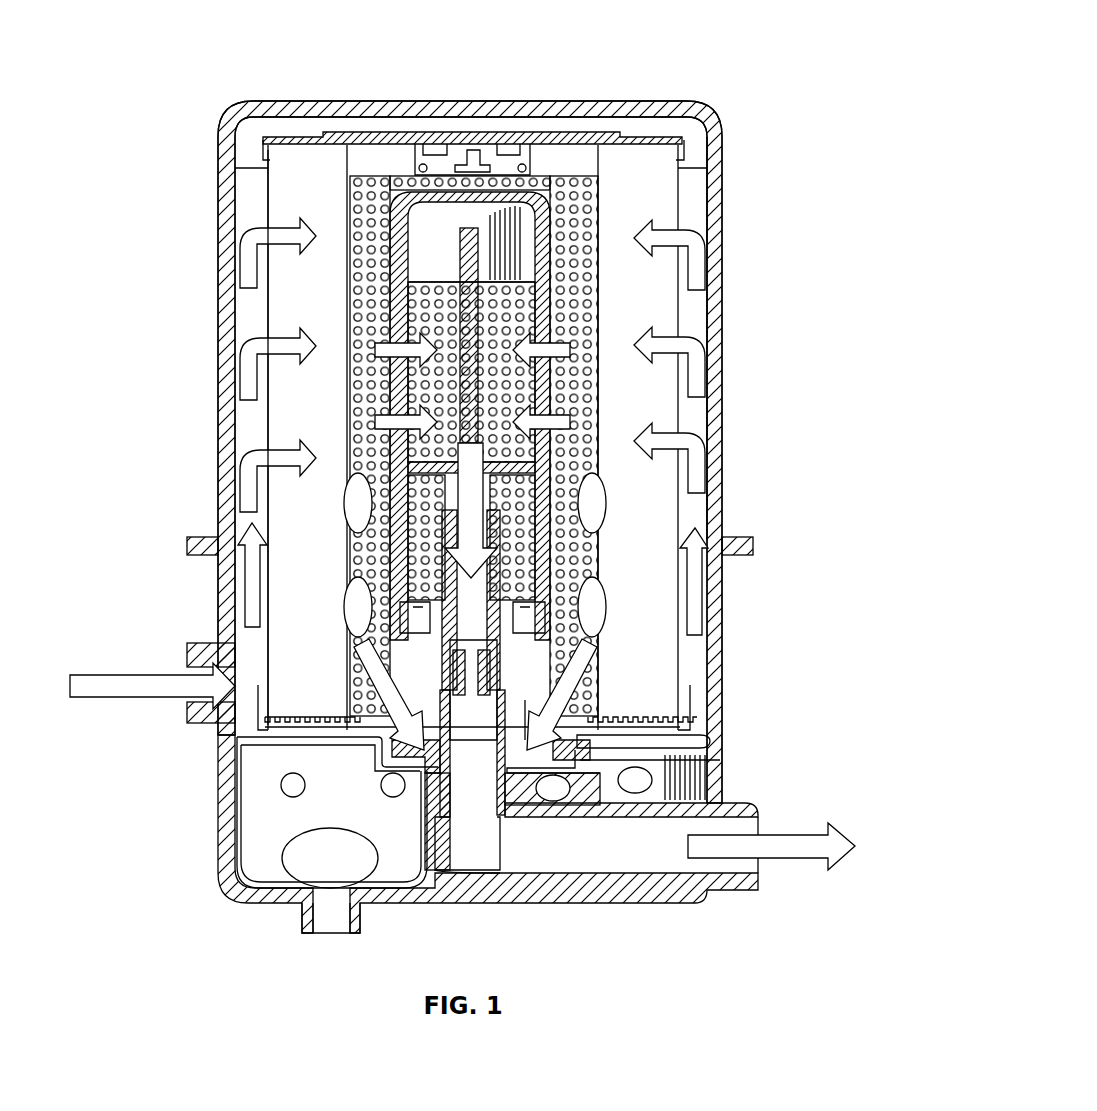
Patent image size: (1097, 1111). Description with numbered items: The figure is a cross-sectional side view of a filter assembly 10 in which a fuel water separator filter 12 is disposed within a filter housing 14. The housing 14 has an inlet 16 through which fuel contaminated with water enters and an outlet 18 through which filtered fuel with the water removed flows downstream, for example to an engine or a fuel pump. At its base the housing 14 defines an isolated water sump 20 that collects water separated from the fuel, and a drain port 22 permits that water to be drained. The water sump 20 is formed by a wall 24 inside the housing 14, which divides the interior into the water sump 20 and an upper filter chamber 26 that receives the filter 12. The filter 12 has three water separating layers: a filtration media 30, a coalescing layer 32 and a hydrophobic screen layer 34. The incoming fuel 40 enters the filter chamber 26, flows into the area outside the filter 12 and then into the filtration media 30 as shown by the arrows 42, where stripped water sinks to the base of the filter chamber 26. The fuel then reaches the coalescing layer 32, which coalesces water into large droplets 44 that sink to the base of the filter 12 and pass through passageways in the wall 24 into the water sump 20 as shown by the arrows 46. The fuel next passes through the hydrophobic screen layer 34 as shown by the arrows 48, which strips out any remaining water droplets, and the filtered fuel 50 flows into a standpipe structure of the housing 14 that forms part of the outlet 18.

The filter assembly 10 is at (705, 50).
The fuel water separator filter 12 is at (657, 656).
The filter housing 14 is at (726, 417).
The inlet 16 is at (195, 650).
The outlet 18 is at (750, 802).
The water sump 20 is at (232, 872).
The drain port 22 is at (362, 915).
The wall 24 is at (275, 760).
The filter chamber 26 is at (707, 325).
The filtration media 30 is at (268, 312).
The coalescing layer 32 is at (356, 150).
The hydrophobic screen layer 34 is at (547, 276).
The incoming fuel 40 is at (112, 702).
The arrows 42 is at (262, 347).
The large droplets 44 is at (607, 500).
The arrows 46 is at (560, 712).
The arrows 48 is at (352, 412).
The filtered fuel 50 is at (368, 548).